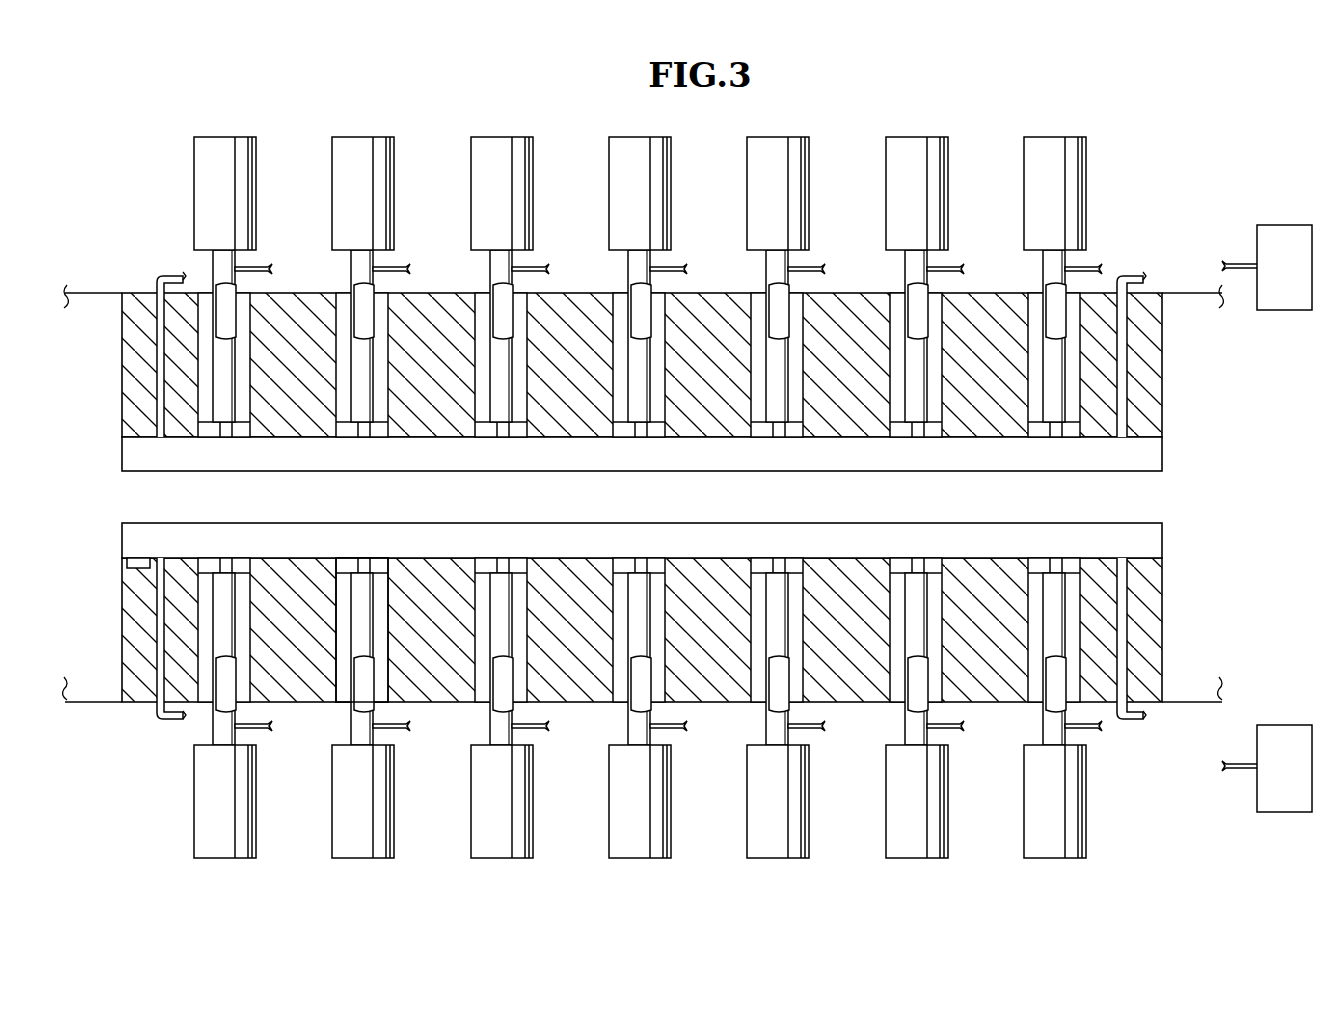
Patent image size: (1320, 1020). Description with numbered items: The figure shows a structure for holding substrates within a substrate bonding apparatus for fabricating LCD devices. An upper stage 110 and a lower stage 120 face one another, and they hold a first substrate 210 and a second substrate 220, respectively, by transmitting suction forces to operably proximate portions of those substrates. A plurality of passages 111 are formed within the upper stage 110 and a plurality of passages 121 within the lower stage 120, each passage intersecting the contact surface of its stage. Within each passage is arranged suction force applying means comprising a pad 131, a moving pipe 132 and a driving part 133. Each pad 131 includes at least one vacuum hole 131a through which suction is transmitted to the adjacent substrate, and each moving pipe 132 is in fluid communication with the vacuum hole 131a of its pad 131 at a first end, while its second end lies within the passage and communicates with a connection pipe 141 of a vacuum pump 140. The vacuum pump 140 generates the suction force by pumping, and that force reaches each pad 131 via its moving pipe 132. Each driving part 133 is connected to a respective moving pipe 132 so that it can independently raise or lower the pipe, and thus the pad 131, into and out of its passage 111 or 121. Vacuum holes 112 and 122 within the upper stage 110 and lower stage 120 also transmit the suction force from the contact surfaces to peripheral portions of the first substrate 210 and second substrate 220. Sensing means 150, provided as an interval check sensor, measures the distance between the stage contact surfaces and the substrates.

The upper stage 110 is at (1152, 378).
The passage 111 is at (203, 323).
The vacuum hole 112 is at (1122, 413).
The lower stage 120 is at (1152, 636).
The passage 121 is at (343, 693).
The vacuum hole 122 is at (1122, 592).
The pad 131 is at (210, 427).
The vacuum hole 131a is at (223, 433).
The moving pipe 132 is at (222, 360).
The driving part 133 is at (201, 189).
The vacuum pump 140 is at (1285, 233).
The connection pipe 141 is at (268, 265).
The sensing means 150 is at (127, 563).
The first substrate 210 is at (1138, 458).
The second substrate 220 is at (1138, 545).